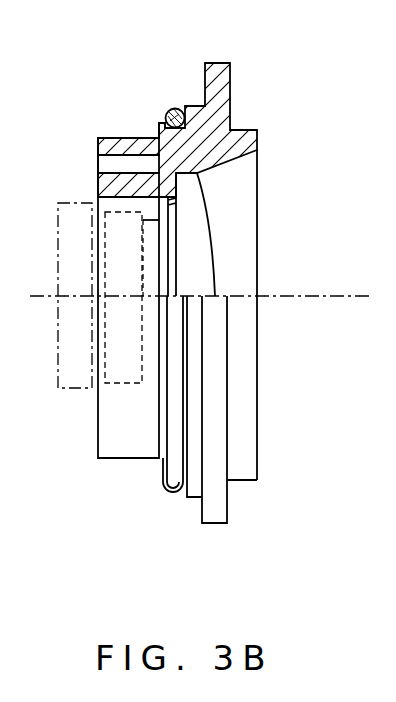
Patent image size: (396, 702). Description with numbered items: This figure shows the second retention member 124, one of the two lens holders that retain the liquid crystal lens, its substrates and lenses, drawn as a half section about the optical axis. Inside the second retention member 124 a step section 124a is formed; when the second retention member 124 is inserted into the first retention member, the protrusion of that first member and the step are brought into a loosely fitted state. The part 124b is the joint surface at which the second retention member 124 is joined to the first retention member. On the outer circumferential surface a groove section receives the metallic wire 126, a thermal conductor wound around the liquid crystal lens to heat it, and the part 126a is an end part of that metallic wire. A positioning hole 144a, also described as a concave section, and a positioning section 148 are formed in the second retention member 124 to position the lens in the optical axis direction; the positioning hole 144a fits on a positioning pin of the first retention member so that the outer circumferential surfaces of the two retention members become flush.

The second retention member 124 is at (237, 137).
The step section 124a is at (110, 136).
The joint surface 124b is at (150, 126).
The metallic wire 126 is at (170, 108).
The end part of the metallic wire 126a is at (178, 296).
The positioning hole 144a is at (92, 158).
The positioning section 148 is at (92, 185).